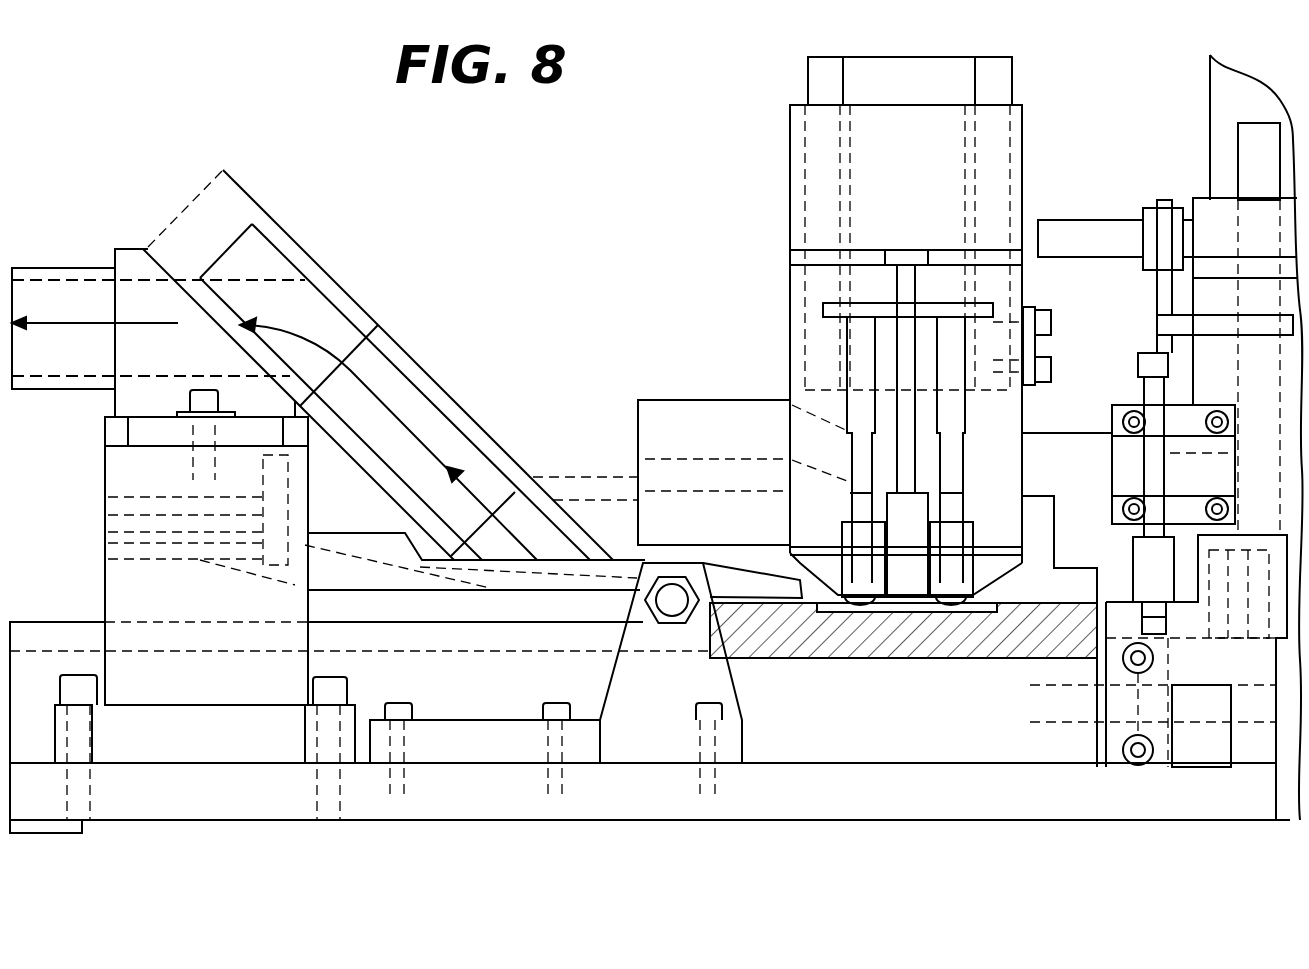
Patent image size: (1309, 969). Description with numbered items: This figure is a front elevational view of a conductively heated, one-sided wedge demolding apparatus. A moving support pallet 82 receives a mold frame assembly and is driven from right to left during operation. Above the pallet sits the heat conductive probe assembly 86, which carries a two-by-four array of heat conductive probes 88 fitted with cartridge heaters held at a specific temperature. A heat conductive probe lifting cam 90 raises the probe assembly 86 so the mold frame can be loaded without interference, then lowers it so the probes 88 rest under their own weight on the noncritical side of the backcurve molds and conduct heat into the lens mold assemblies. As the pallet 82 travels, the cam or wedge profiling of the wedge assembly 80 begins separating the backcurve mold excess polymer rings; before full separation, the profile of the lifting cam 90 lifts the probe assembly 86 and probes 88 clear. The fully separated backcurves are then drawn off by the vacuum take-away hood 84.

The wedge assembly 80 is at (387, 550).
The moving support pallet 82 is at (1017, 643).
The vacuum take-away hood 84 is at (437, 457).
The heat conductive probe assembly 86 is at (895, 287).
The heat conductive probes 88 is at (933, 573).
The heat conductive probe lifting cam 90 is at (700, 423).